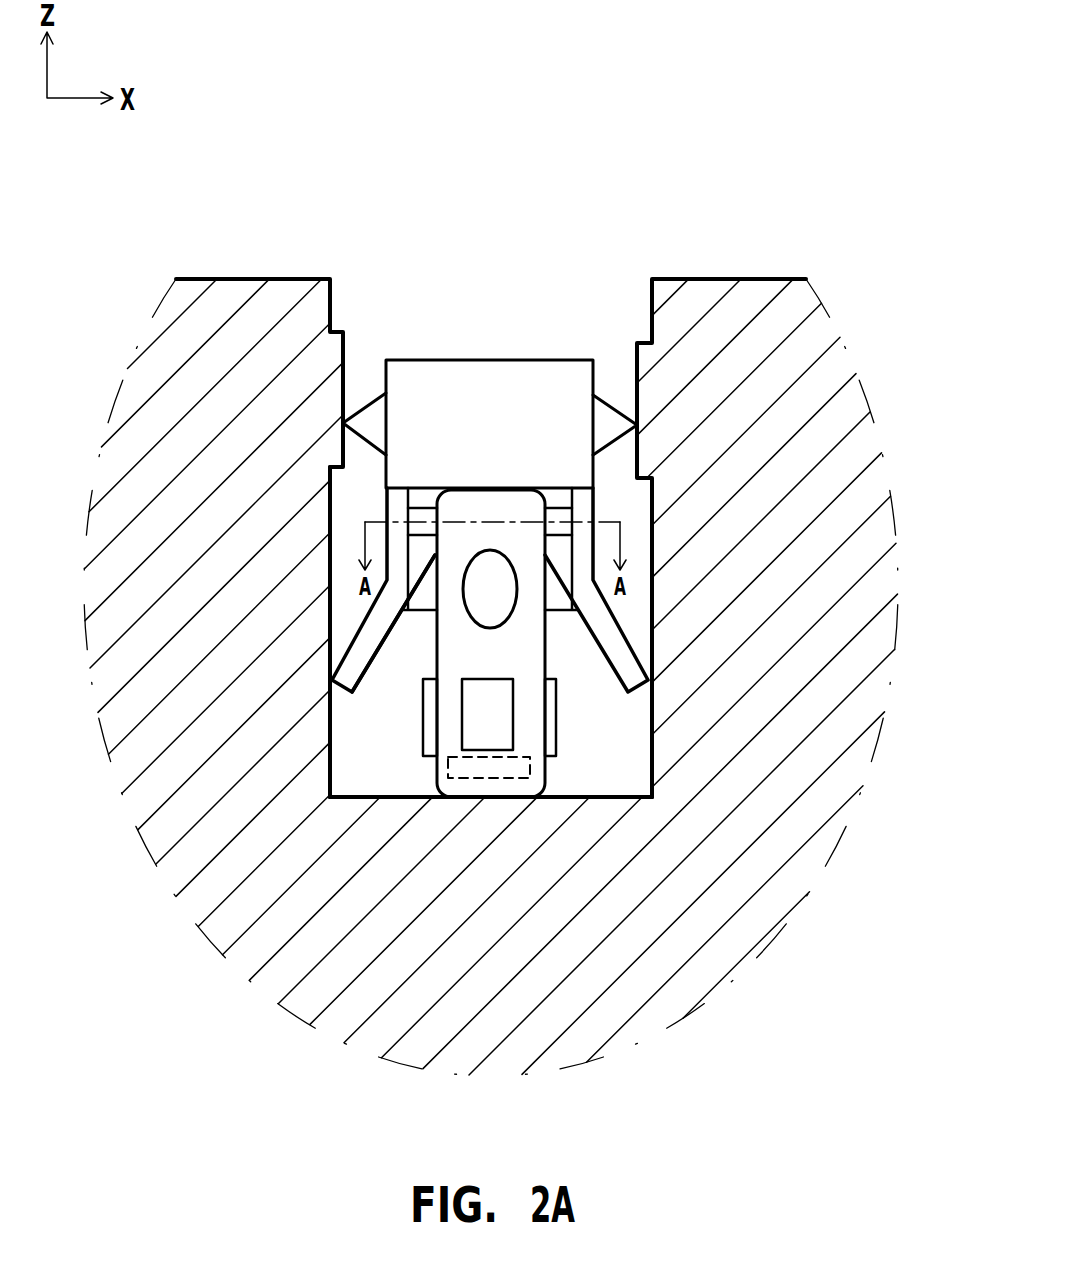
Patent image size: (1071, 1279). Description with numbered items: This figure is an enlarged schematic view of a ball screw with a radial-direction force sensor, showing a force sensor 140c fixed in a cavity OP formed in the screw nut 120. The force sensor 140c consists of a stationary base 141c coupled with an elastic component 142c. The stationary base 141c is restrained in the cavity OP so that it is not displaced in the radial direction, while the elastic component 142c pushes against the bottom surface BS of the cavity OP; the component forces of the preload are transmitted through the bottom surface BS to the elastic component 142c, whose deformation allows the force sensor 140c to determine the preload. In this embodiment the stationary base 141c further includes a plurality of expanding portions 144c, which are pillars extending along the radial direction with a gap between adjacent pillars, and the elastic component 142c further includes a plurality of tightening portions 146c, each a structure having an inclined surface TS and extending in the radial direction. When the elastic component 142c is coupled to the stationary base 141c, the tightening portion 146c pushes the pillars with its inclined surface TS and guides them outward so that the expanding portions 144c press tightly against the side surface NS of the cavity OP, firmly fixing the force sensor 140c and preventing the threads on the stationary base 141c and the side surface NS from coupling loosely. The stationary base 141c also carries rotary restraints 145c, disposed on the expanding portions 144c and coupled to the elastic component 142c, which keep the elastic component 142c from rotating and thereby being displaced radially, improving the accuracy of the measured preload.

The screw nut 120 is at (200, 368).
The force sensor 140c is at (436, 290).
The stationary base 141c is at (495, 388).
The elastic component 142c is at (510, 650).
The expanding portions 144c is at (630, 663).
The rotary restraint 145c is at (553, 515).
The tightening portion 146c is at (423, 600).
The inclined surface TS is at (415, 562).
The side surface NS is at (345, 725).
The cavity OP is at (402, 779).
The bottom surface BS is at (585, 782).